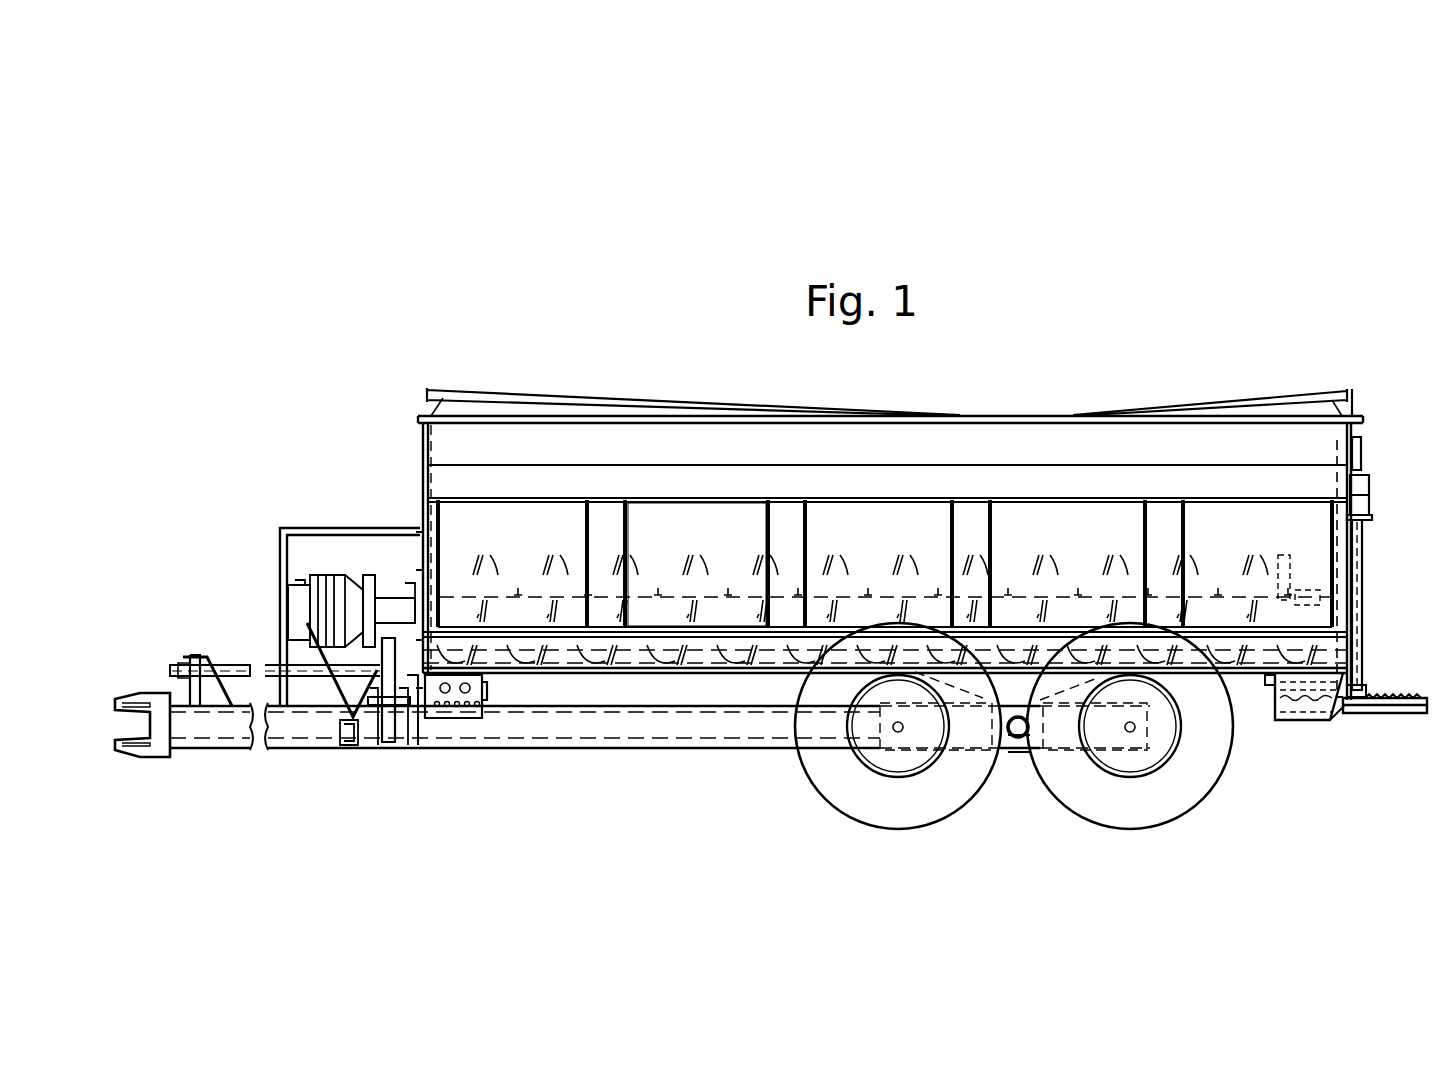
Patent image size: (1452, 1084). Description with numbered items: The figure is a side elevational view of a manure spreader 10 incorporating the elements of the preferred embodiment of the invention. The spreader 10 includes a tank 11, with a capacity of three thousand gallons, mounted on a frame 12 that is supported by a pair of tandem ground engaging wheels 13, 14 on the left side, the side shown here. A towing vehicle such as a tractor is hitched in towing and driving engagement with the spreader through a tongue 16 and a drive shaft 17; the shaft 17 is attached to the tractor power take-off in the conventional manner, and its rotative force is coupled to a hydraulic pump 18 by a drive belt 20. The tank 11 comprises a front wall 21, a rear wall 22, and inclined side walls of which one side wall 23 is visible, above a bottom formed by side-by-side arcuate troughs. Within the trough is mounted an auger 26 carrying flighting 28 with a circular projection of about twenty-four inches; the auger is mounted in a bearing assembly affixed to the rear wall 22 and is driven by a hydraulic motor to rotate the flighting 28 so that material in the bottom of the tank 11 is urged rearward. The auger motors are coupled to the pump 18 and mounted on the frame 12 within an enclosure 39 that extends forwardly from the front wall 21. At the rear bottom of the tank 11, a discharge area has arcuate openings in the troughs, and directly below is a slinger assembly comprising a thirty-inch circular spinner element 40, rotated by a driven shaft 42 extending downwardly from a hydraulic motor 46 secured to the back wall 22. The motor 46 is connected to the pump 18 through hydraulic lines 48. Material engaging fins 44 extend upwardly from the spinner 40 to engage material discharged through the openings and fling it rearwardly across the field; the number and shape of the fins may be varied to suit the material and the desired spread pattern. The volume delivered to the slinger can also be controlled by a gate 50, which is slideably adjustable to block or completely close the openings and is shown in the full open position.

The manure spreader 10 is at (548, 305).
The tank 11 is at (1184, 402).
The frame 12 is at (602, 723).
The ground engaging wheel 13 is at (940, 807).
The ground engaging wheel 14 is at (1187, 797).
The tongue 16 is at (135, 693).
The drive shaft 17 is at (236, 663).
The hydraulic pump 18 is at (467, 697).
The drive belt 20 is at (388, 713).
The front wall 21 is at (422, 452).
The rear wall 22 is at (1353, 428).
The inclined side wall 23 is at (894, 541).
The auger 26 is at (707, 558).
The flighting 28 is at (917, 558).
The enclosure 39 is at (338, 527).
The spinner element 40 is at (1400, 716).
The driven shaft 42 is at (1365, 682).
The material engaging fin 44 is at (1380, 698).
The hydraulic motor 46 is at (1365, 504).
The hydraulic line 48 is at (1363, 448).
The gate 50 is at (1243, 678).